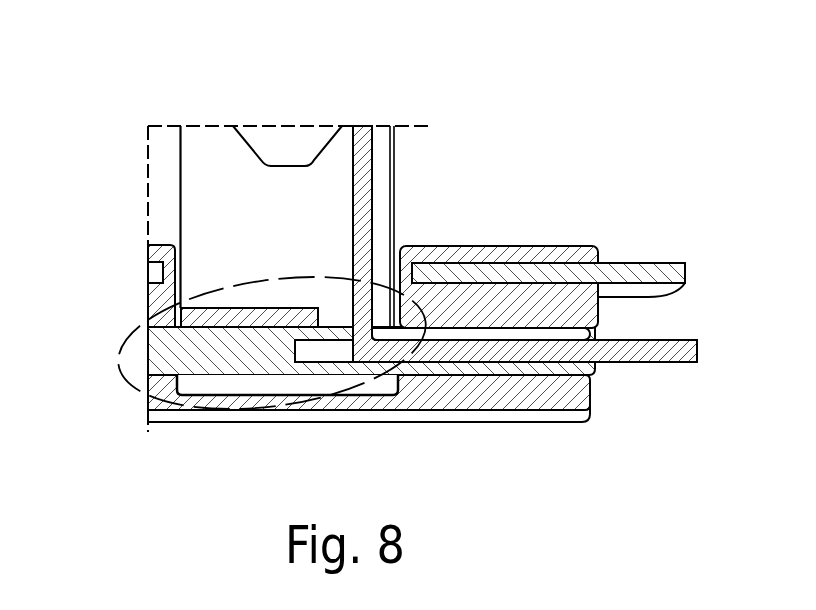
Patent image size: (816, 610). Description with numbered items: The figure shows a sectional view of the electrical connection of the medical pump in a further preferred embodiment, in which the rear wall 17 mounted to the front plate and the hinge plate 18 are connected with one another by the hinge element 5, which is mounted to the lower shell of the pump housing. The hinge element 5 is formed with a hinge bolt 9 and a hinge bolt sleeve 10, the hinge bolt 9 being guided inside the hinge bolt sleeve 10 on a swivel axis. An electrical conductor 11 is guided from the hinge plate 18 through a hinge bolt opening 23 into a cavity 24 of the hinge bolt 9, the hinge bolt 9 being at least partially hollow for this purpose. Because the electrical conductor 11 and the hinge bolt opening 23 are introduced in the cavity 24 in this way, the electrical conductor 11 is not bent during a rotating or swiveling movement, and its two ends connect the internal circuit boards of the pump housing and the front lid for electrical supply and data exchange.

The hinge element 5 is at (137, 395).
The hinge bolt 9 is at (175, 362).
The hinge bolt sleeve 10 is at (195, 316).
The electrical conductor 11 is at (360, 126).
The rear wall 17 is at (570, 253).
The hinge plate 18 is at (197, 157).
The hinge bolt opening 23 is at (362, 330).
The cavity 24 is at (315, 353).